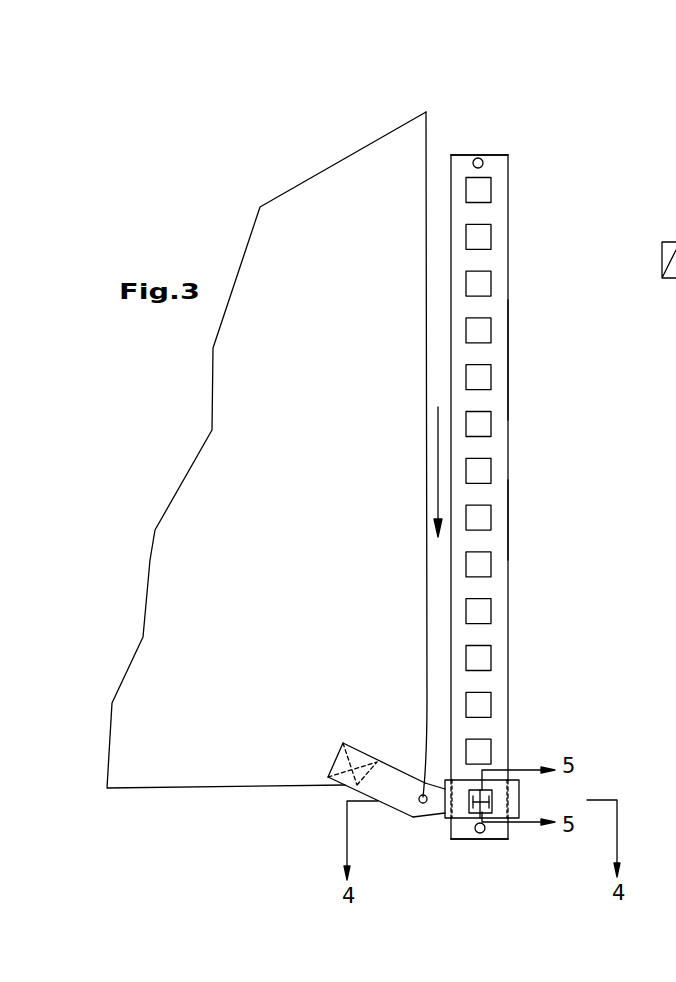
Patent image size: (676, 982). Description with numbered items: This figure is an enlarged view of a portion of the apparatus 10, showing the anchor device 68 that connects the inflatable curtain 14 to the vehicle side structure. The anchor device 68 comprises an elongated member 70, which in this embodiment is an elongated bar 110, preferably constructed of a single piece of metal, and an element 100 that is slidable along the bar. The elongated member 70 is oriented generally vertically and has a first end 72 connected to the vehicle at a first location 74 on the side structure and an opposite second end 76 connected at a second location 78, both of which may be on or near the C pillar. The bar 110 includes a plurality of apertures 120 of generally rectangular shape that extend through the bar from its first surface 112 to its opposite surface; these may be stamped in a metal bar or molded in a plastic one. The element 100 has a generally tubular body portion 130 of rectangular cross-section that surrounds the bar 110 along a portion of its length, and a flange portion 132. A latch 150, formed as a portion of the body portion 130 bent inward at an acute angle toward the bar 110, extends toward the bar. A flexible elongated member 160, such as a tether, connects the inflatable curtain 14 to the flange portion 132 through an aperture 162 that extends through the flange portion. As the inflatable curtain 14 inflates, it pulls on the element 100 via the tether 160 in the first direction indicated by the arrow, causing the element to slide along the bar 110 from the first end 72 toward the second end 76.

The apparatus 10 is at (267, 477).
The inflatable curtain 14 is at (238, 712).
The anchor device 68 is at (507, 494).
The elongated member 70 is at (496, 352).
The first end 72 is at (460, 167).
The first location 74 is at (479, 158).
The second end 76 is at (460, 833).
The second location 78 is at (485, 838).
The element 100 is at (517, 780).
The elongated bar 110 is at (492, 397).
The first surface 112 is at (492, 538).
The apertures 120 is at (485, 512).
The body portion 130 is at (513, 803).
The flange portion 132 is at (437, 815).
The latch 150 is at (477, 788).
The flexible elongated member 160 is at (378, 763).
The aperture 162 is at (430, 797).